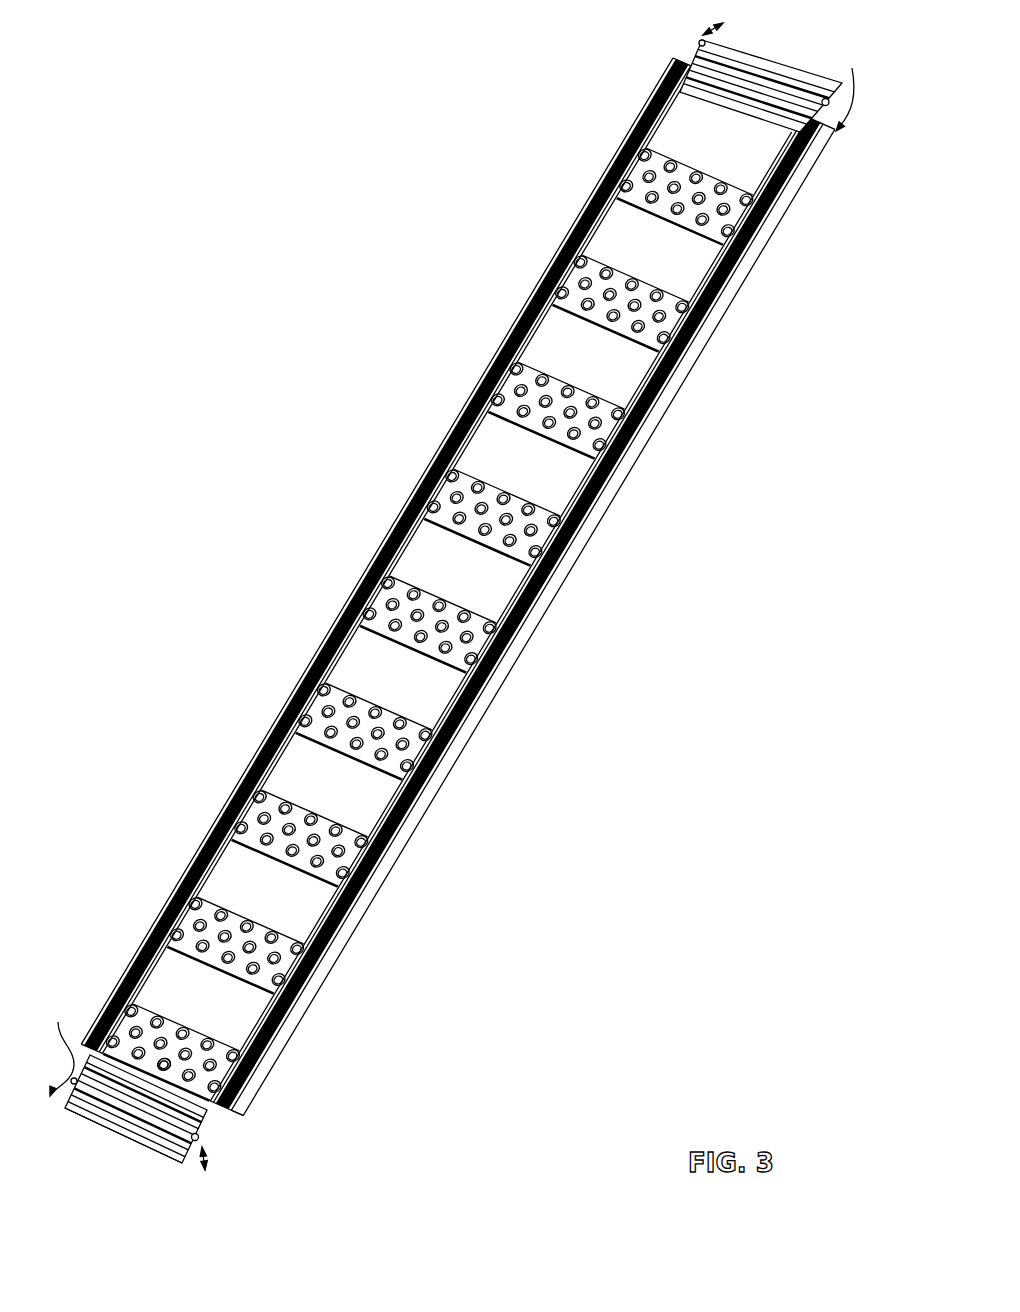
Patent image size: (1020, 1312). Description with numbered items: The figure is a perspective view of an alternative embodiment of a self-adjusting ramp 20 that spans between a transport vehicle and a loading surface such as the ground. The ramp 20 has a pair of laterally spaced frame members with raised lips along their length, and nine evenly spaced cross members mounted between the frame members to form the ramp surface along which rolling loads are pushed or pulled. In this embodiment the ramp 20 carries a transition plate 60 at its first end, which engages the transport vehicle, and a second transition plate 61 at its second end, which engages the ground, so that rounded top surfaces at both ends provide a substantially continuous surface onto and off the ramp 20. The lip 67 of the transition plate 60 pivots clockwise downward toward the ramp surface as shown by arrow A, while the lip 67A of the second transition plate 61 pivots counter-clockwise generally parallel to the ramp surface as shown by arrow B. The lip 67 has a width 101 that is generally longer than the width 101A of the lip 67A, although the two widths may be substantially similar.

The self-adjusting ramp 20 is at (449, 606).
The transition plate 60 is at (692, 46).
The second transition plate 61 is at (65, 1129).
The lip 67 is at (729, 76).
The lip of second transition plate 67A is at (175, 1115).
The width of lip 101 is at (700, 28).
The width of second lip 101A is at (218, 1160).